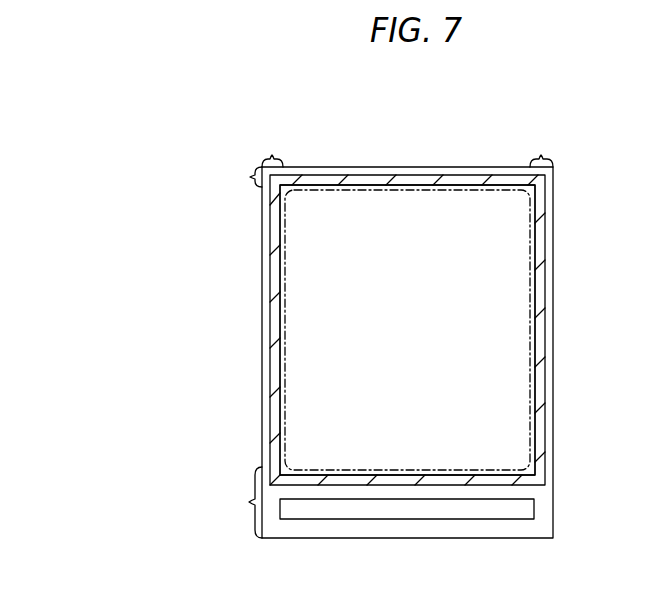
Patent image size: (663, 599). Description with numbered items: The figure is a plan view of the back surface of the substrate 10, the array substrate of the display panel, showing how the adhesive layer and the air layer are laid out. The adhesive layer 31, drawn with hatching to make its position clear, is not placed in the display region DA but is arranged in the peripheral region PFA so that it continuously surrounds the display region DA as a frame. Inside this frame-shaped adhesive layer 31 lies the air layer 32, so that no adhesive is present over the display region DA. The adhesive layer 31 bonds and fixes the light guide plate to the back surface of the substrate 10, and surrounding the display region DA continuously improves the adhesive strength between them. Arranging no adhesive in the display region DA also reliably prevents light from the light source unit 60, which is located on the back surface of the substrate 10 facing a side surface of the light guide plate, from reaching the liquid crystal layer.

The substrate 10 is at (183, 302).
The adhesive layer 31 is at (542, 270).
The air layer 32 is at (510, 400).
The display region DA is at (288, 373).
The light source unit 60 is at (508, 512).
The peripheral region PFA is at (384, 331).